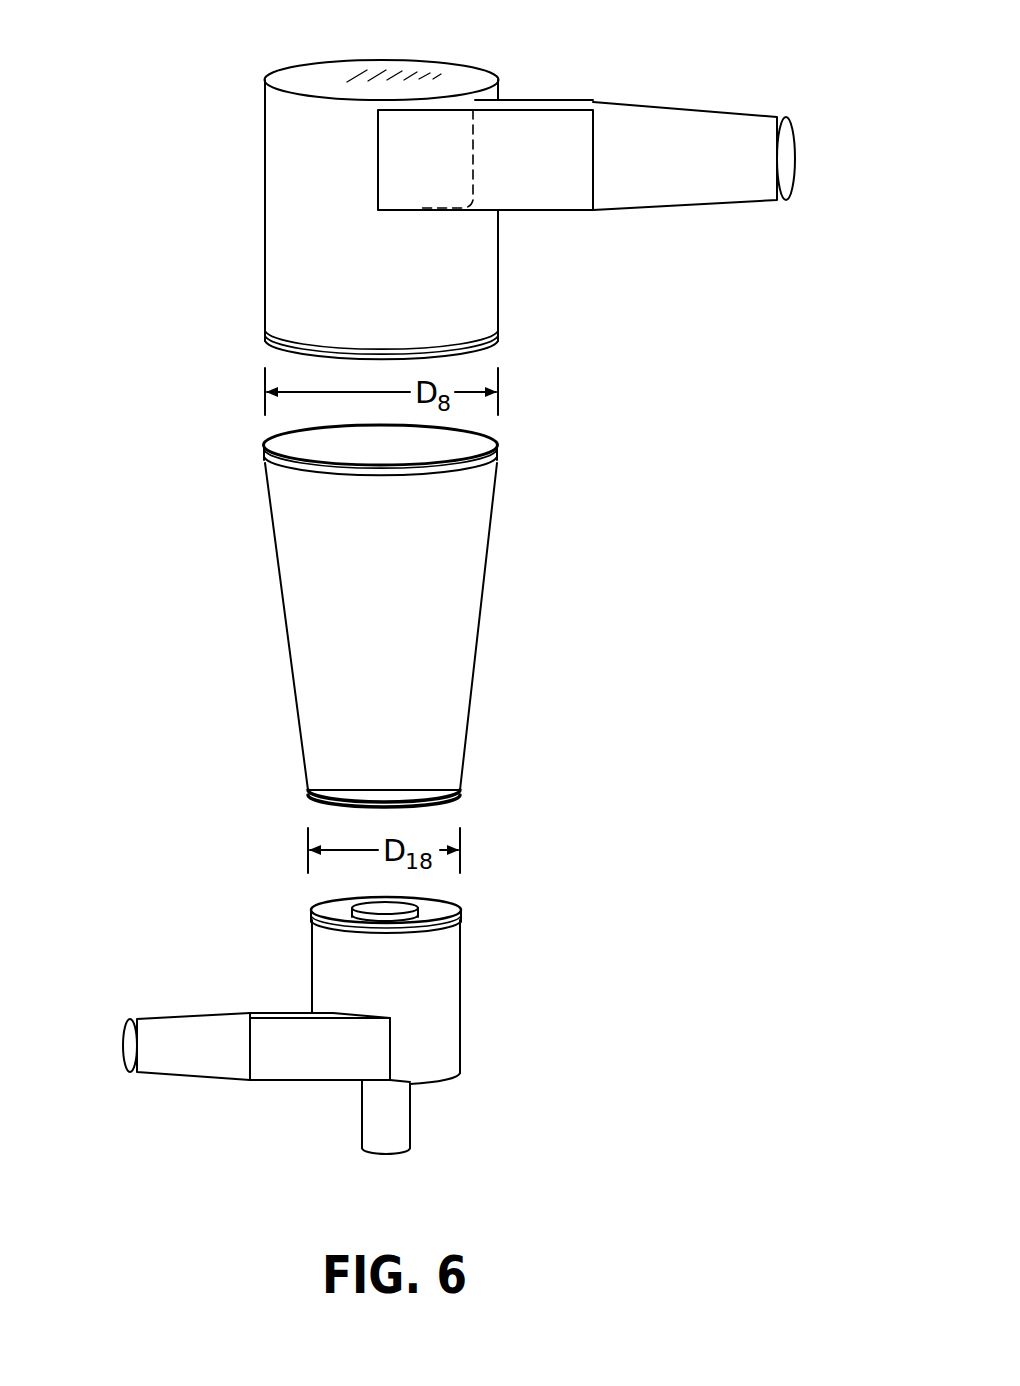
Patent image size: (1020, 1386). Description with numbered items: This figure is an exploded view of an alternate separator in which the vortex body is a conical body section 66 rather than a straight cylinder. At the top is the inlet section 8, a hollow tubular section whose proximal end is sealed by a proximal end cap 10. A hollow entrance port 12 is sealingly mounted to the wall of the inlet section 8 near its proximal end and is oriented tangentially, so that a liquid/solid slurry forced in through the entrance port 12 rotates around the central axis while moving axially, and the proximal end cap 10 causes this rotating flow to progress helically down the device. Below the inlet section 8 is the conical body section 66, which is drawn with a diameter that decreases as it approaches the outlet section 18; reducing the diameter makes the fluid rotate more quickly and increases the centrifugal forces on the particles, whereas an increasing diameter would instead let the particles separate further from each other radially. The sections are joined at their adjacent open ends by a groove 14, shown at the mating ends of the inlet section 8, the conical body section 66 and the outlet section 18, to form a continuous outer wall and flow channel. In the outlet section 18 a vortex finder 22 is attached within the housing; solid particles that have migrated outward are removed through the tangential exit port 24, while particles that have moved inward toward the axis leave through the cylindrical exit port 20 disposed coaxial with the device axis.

The inlet section 8 is at (530, 165).
The proximal end cap 10 is at (457, 72).
The entrance port 12 is at (665, 103).
The groove 14 is at (498, 331).
The conical body section 66 is at (533, 615).
The outlet section 18 is at (361, 999).
The cylindrical exit port 20 is at (412, 1115).
The vortex finder 22 is at (425, 903).
The tangential exit port 24 is at (187, 1013).